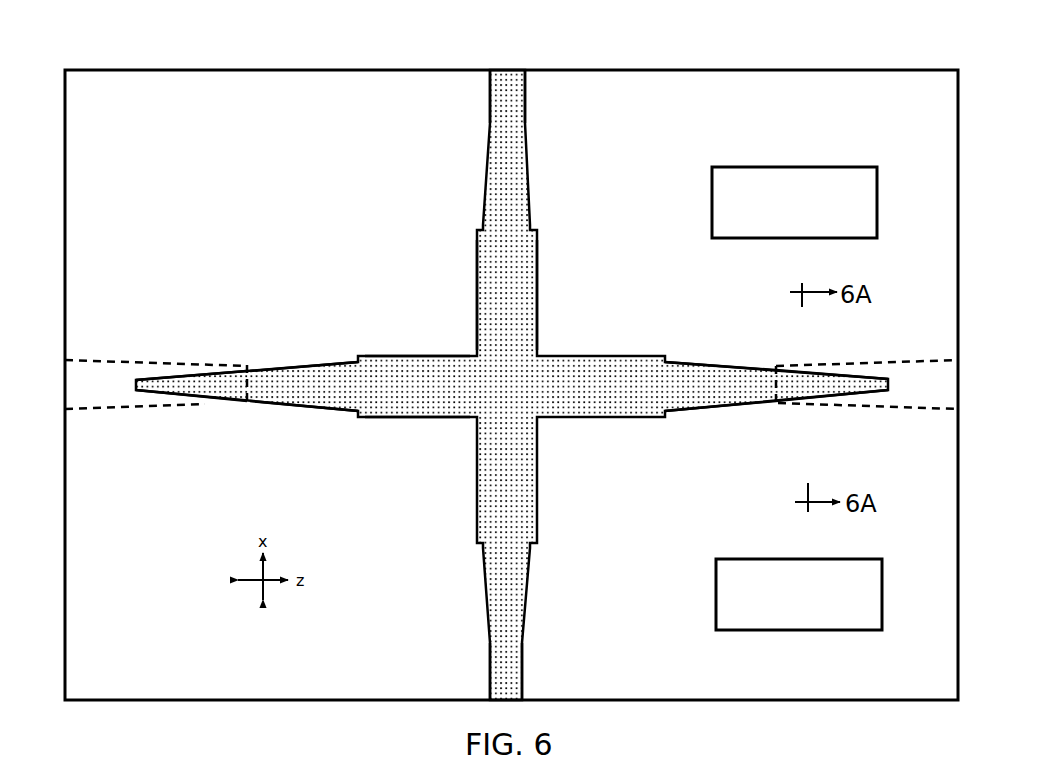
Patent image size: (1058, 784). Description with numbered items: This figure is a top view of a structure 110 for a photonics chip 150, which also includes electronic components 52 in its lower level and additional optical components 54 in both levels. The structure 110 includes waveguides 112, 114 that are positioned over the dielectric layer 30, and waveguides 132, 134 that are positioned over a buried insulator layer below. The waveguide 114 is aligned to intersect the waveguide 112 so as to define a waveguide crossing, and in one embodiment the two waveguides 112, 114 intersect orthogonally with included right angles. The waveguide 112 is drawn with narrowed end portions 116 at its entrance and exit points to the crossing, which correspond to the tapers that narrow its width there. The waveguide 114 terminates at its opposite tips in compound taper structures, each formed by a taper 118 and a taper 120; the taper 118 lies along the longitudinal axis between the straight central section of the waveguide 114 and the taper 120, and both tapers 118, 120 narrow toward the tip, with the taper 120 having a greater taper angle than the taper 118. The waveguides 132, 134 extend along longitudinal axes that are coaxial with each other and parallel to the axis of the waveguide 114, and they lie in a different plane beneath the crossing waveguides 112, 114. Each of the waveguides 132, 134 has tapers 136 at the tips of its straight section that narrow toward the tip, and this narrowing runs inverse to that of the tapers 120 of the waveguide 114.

The photonics chip 150 is at (138, 62).
The dielectric layer 30 is at (134, 584).
The structure 110 is at (316, 270).
The waveguide 112 is at (503, 272).
The waveguide 114 is at (422, 391).
The tapered waveguide ends 116 is at (487, 161).
The taper 118 is at (300, 409).
The taper 120 is at (205, 402).
The waveguide 132 is at (100, 384).
The waveguide 134 is at (922, 392).
The taper 136 is at (198, 360).
The electronic components 52 is at (716, 590).
The optical components 54 is at (712, 208).